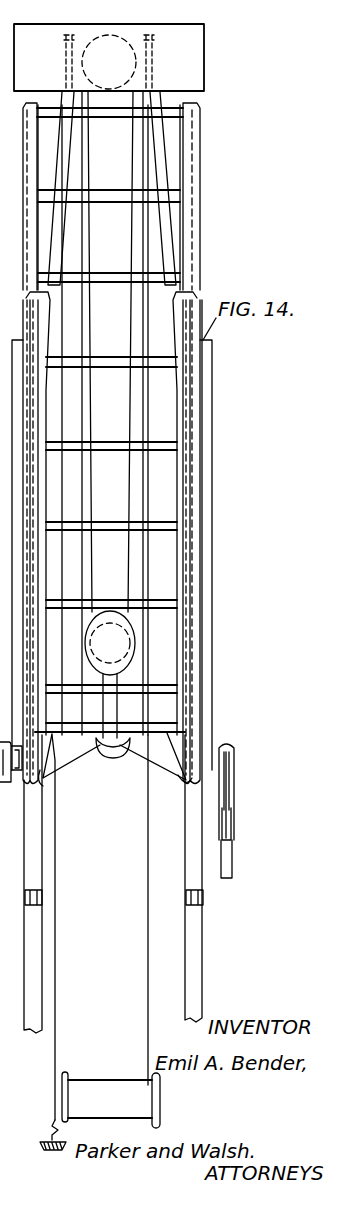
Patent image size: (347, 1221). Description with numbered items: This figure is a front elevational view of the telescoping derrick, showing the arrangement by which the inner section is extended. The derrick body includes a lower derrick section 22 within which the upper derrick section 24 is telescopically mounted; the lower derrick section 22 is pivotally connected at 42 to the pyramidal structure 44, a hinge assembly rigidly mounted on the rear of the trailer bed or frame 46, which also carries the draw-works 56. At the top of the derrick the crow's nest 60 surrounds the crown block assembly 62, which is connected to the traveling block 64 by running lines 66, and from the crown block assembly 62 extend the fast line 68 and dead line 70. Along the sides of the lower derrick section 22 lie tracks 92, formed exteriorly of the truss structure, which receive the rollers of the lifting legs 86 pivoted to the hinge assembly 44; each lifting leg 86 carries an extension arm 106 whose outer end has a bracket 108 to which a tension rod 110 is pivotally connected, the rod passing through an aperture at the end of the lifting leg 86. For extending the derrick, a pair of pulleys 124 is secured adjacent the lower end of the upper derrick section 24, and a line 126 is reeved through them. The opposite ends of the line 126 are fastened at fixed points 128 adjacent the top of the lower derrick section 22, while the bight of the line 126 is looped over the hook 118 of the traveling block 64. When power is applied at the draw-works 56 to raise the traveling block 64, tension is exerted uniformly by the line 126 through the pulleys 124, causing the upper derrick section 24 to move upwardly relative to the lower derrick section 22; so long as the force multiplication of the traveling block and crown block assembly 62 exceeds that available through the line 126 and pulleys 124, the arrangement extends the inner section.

The lower derrick section 22 is at (203, 188).
The upper derrick section 24 is at (164, 100).
The pivotal connection 42 is at (205, 898).
The pyramidal structure 44 is at (202, 983).
The trailer bed or frame 46 is at (46, 1138).
The draw-works 56 is at (88, 1085).
The crow's nest 60 is at (190, 52).
The crown block assembly 62 is at (64, 49).
The traveling block 64 is at (108, 612).
The running lines 66 is at (140, 243).
The fast line 68 is at (148, 977).
The dead line 70 is at (55, 1015).
The lifting legs 86 is at (236, 764).
The tracks 92 is at (212, 412).
The extension arm 106 is at (233, 858).
The bracket 108 is at (232, 820).
The tension rod 110 is at (232, 784).
The hook 118 is at (112, 708).
The pulleys 124 is at (178, 782).
The line 126 is at (74, 762).
The fixed points 128 is at (31, 104).